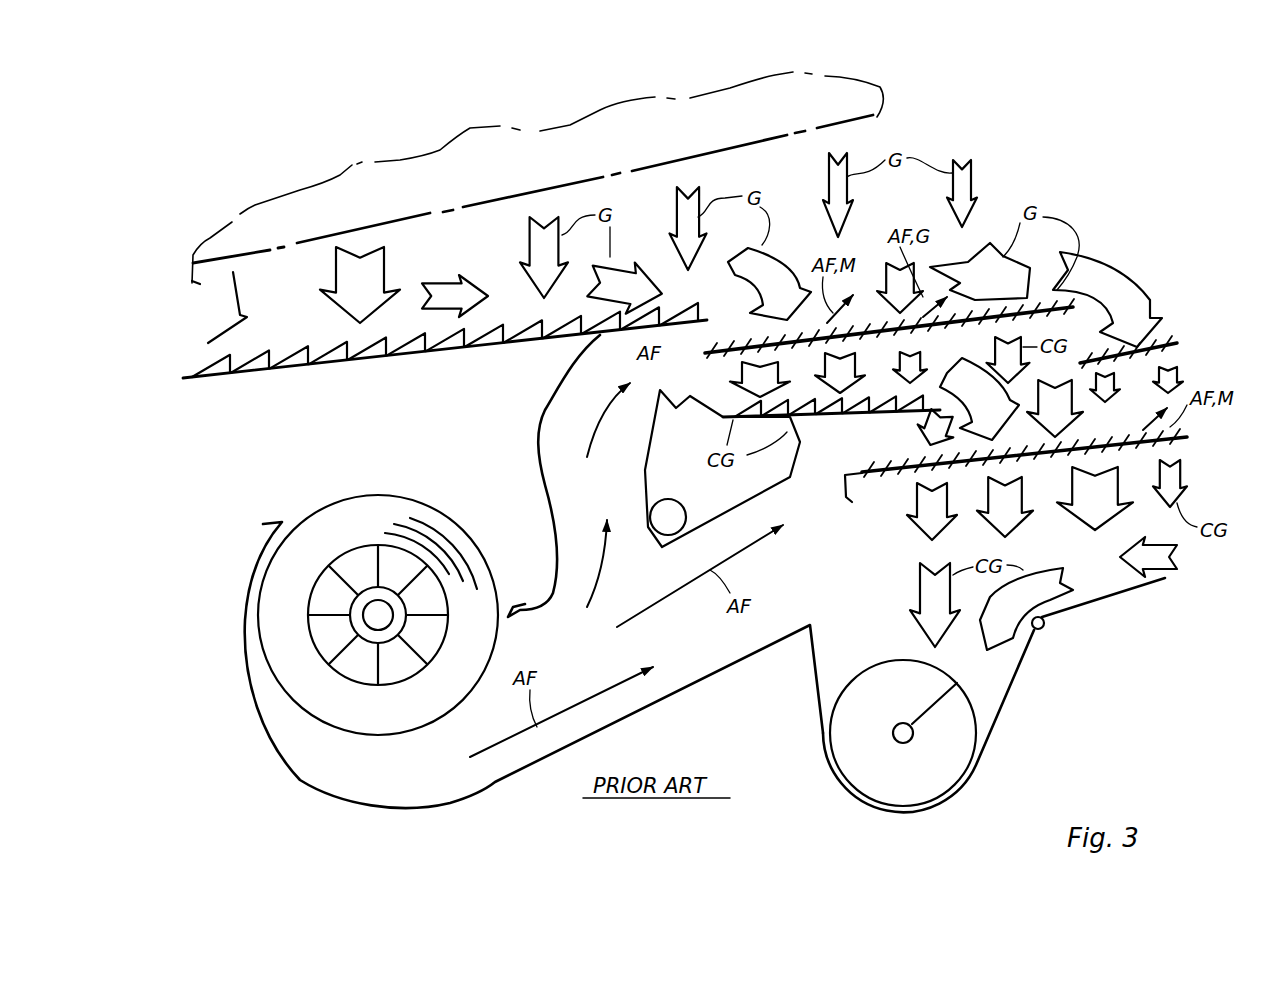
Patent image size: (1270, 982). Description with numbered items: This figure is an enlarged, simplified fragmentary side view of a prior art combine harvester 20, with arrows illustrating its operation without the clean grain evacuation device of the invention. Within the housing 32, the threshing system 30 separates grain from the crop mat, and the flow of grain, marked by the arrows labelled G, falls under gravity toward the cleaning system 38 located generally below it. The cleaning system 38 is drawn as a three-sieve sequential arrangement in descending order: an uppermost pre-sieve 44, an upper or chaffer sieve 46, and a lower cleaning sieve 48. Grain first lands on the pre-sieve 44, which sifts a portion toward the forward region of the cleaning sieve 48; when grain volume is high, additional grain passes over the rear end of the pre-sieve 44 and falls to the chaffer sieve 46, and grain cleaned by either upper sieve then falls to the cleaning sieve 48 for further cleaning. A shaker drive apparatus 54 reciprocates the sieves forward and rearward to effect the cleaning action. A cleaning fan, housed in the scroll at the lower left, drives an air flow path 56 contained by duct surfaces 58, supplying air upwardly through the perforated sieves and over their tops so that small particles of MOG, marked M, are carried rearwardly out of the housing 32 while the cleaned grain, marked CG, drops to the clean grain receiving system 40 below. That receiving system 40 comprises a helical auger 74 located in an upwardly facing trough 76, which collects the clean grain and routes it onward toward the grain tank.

The combine harvester 20 is at (1098, 128).
The threshing system 30 is at (884, 86).
The housing 32 is at (1018, 126).
The cleaning system 38 is at (1182, 333).
The clean grain receiving system 40 is at (972, 787).
The pre-sieve 44 is at (1067, 280).
The chaffer sieve 46 is at (1180, 352).
The cleaning sieve 48 is at (1185, 438).
The shaker drive apparatus 54 is at (660, 540).
The air flow path 56 is at (616, 492).
The duct surfaces 58 is at (540, 427).
The helical auger 74 is at (980, 703).
The trough 76 is at (987, 743).